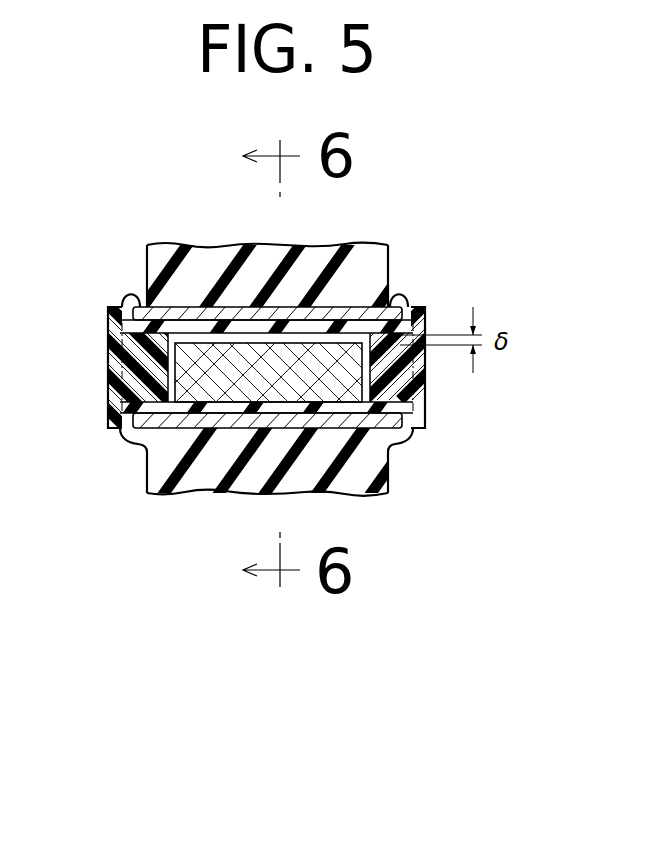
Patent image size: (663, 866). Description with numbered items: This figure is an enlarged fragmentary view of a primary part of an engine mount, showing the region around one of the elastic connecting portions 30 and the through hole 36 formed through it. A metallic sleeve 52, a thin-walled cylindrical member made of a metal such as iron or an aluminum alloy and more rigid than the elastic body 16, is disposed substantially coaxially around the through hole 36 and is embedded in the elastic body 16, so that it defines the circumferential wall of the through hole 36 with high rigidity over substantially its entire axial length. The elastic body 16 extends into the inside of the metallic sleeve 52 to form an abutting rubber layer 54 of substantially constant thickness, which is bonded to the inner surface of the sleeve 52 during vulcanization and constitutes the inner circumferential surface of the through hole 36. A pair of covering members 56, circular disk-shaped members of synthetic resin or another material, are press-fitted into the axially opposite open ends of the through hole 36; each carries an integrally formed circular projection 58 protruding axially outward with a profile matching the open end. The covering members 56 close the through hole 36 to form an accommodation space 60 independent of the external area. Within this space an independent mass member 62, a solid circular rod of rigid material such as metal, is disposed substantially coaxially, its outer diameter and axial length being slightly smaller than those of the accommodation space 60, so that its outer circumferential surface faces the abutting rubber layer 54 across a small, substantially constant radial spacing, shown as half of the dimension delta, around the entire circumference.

The elastic body 16 is at (357, 235).
The elastic connecting portion 30 is at (362, 262).
The through hole 36 is at (197, 338).
The metallic sleeve 52 is at (230, 310).
The abutting rubber layer 54 is at (263, 413).
The covering member 56 is at (113, 323).
The circular projection 58 is at (148, 357).
The accommodation space 60 is at (292, 337).
The independent mass member 62 is at (328, 360).